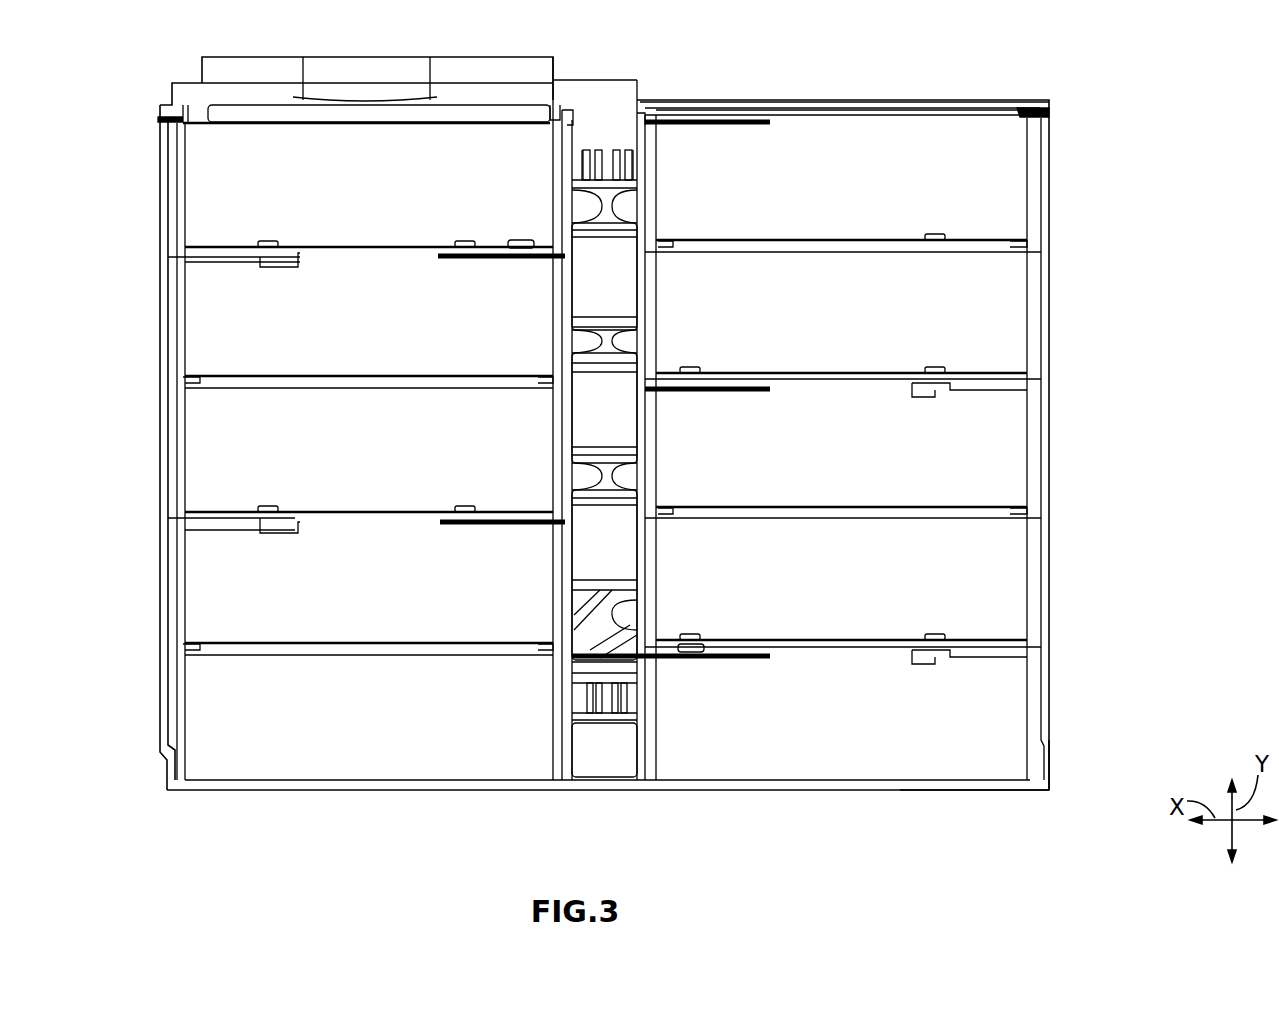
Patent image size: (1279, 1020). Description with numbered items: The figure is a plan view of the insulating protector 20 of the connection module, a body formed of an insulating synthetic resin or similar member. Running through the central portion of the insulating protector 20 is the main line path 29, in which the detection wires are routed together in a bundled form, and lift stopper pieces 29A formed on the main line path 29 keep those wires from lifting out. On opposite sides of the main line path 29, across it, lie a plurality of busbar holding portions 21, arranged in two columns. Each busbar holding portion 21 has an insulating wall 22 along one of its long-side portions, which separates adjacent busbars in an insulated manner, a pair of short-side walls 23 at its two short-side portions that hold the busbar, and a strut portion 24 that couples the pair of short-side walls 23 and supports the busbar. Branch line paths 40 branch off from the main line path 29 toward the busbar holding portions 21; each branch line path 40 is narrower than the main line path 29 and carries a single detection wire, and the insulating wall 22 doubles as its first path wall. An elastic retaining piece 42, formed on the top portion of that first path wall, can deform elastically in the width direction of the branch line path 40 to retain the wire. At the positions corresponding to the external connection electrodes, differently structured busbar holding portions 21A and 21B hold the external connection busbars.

The insulating protector 20 is at (591, 845).
The busbar holding portion 21 is at (1054, 151).
The busbar holding portion 21A is at (1062, 742).
The busbar holding portion 21B is at (154, 158).
The insulating wall 22 is at (965, 378).
The short-side wall 23 is at (1035, 292).
The strut portion 24 is at (958, 228).
The main line path 29 is at (596, 98).
The lift stopper piece 29A is at (623, 212).
The branch line path 40 is at (414, 255).
The elastic retaining piece 42 is at (520, 240).